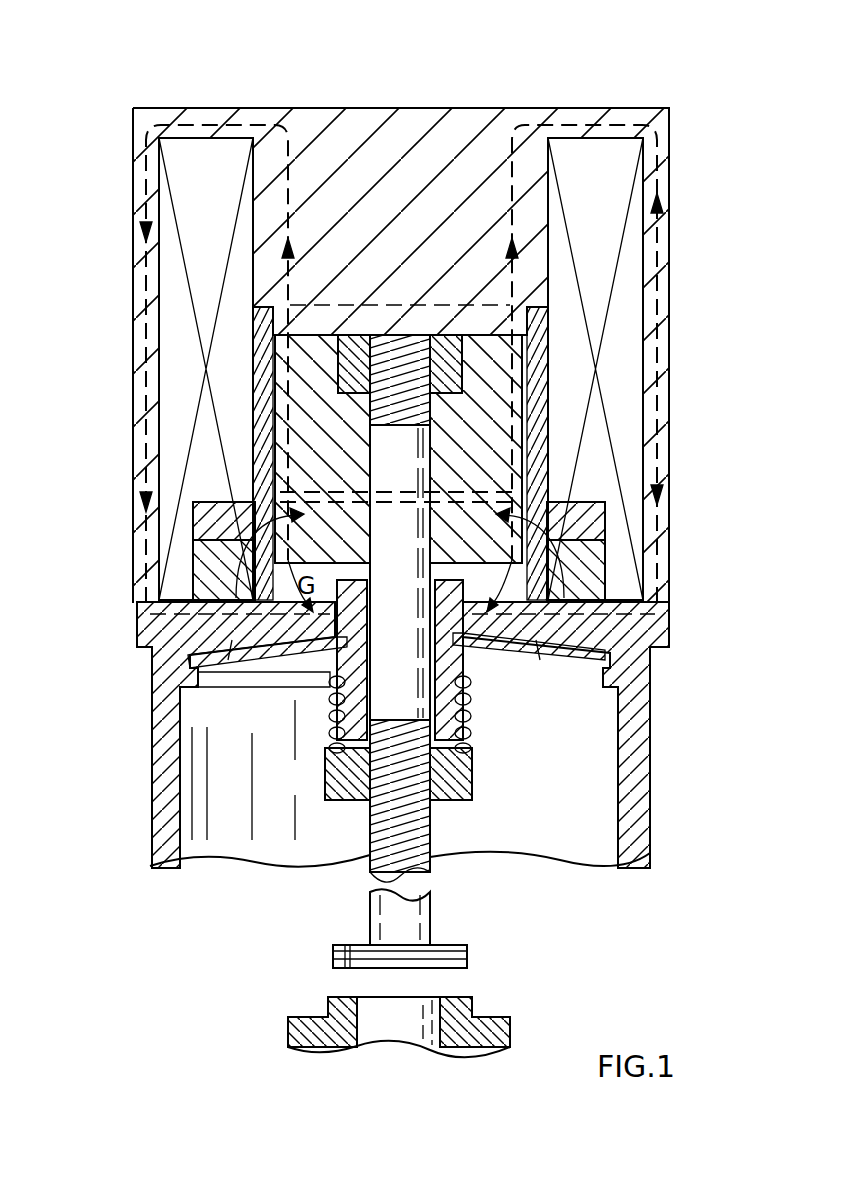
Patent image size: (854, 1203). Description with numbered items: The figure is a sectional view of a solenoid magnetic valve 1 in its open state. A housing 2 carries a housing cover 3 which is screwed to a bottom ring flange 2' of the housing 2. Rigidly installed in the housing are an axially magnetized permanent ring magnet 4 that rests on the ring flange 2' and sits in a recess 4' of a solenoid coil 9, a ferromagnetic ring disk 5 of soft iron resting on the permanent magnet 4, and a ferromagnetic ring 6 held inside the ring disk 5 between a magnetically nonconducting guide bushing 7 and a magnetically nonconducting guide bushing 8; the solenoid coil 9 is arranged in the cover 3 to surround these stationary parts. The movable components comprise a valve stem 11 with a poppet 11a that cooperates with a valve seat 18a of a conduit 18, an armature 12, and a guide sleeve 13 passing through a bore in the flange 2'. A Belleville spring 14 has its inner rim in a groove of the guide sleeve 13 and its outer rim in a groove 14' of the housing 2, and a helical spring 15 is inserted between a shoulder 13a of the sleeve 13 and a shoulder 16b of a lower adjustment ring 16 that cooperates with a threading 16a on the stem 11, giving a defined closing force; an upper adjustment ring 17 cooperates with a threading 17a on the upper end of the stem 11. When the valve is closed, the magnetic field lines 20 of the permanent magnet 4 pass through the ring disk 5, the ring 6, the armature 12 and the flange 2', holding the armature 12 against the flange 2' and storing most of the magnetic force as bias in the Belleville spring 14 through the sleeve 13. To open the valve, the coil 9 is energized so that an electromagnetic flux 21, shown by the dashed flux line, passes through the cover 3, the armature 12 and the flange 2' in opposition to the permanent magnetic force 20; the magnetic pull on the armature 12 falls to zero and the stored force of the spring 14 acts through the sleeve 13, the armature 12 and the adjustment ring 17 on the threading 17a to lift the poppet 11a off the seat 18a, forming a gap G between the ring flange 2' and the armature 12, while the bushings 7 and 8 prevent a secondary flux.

The solenoid magnetic valve 1 is at (472, 84).
The housing 2 is at (406, 735).
The bottom ring flange 2' is at (401, 612).
The housing cover 3 is at (500, 190).
The permanent ring magnet 4 is at (622, 570).
The recess 4' is at (626, 532).
The ferromagnetic ring disk 5 is at (200, 516).
The ferromagnetic ring 6 is at (540, 500).
The guide bushing 7 is at (505, 597).
The guide bushing 8 is at (515, 307).
The solenoid coil 9 is at (175, 352).
The valve stem 11 is at (412, 463).
The poppet 11a is at (453, 953).
The armature 12 is at (483, 440).
The guide sleeve 13 is at (650, 640).
The shoulder 13a is at (320, 686).
The Belleville spring 14 is at (572, 658).
The groove 14' is at (229, 669).
The helical spring 15 is at (472, 729).
The lower adjustment ring 16 is at (458, 778).
The threading 16a is at (427, 832).
The shoulder 16b is at (327, 768).
The upper adjustment ring 17 is at (460, 382).
The threading 17a is at (510, 307).
The conduit 18 is at (497, 1036).
The valve seat 18a is at (450, 997).
The magnetic field lines 20 is at (228, 660).
The electromagnetic flux 21 is at (144, 262).